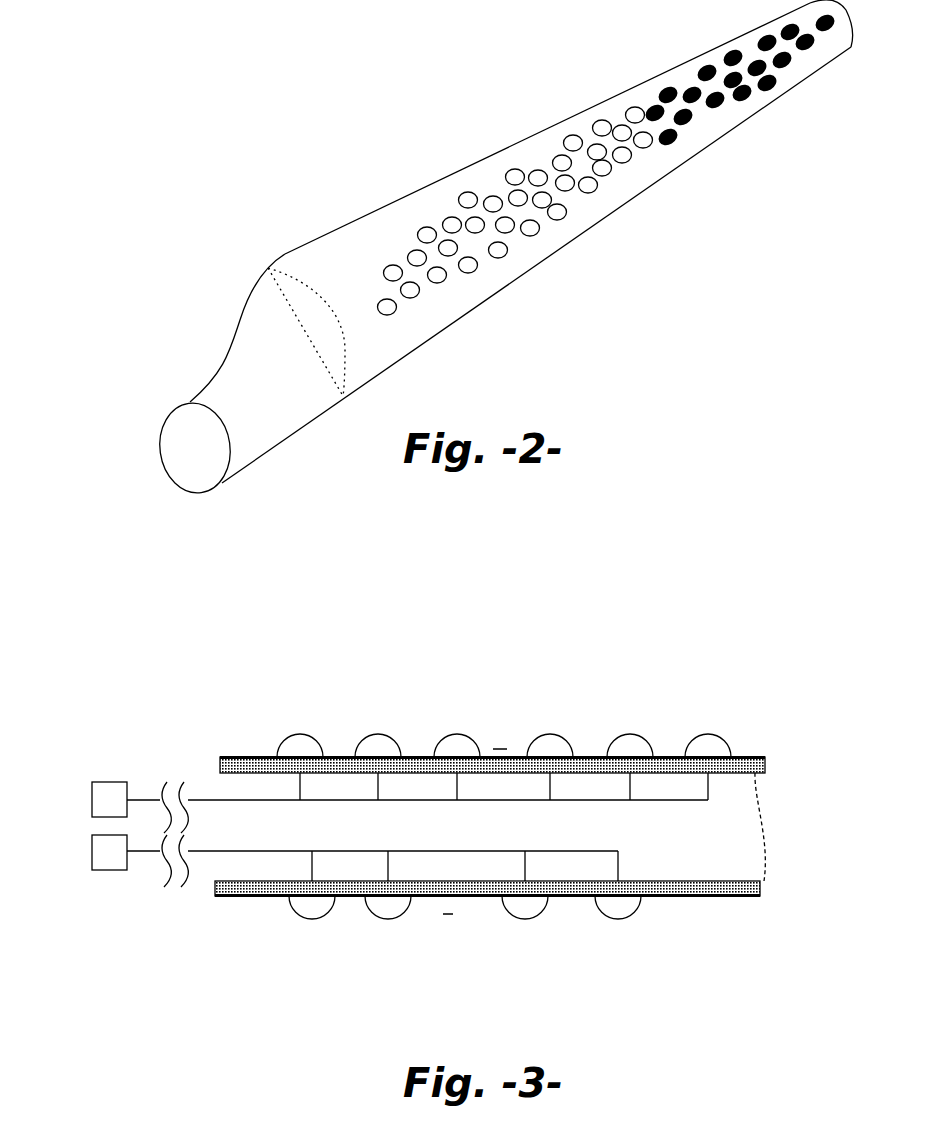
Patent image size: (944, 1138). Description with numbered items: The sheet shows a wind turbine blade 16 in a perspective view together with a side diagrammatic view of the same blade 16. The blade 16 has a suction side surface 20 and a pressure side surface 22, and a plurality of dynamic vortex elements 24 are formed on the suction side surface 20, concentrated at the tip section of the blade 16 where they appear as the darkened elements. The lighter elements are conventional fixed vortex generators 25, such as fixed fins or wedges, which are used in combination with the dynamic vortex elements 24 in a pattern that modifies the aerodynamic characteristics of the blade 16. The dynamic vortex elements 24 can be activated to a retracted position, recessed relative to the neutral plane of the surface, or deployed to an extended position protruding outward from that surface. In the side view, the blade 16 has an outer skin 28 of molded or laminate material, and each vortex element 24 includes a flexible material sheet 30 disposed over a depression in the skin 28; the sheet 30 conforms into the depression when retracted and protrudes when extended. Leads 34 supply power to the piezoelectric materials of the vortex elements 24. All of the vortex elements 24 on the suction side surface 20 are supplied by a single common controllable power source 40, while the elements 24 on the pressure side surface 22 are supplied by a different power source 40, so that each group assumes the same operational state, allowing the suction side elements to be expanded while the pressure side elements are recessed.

In FIG. 2, the wind turbine blade 16 is at (372, 126).
In FIG. 2, the suction side surface 20 is at (637, 163).
In FIG. 3, the suction side surface 20 is at (248, 742).
In FIG. 2, the pressure side surface 22 is at (422, 217).
In FIG. 3, the pressure side surface 22 is at (710, 912).
In FIG. 2, the dynamic vortex element 24 is at (658, 100).
In FIG. 3, the dynamic vortex element 24 is at (708, 747).
In FIG. 2, the fixed vortex generator 25 is at (530, 182).
In FIG. 3, the outer skin 28 is at (585, 760).
In FIG. 3, the flexible material sheet 30 is at (375, 735).
In FIG. 3, the leads 34 is at (417, 830).
In FIG. 3, the controllable power source 40 is at (110, 798).